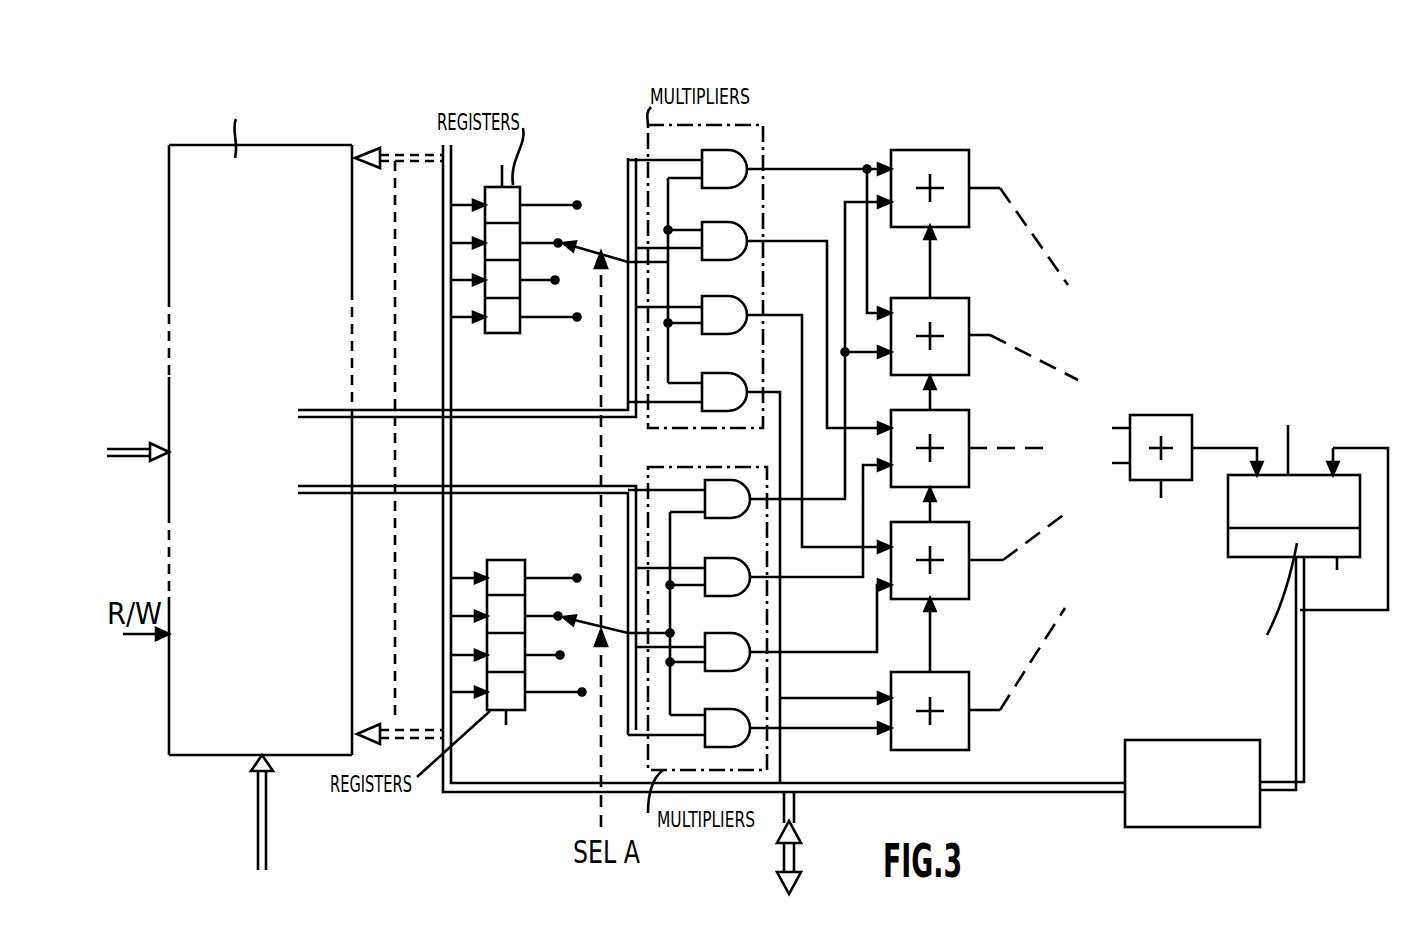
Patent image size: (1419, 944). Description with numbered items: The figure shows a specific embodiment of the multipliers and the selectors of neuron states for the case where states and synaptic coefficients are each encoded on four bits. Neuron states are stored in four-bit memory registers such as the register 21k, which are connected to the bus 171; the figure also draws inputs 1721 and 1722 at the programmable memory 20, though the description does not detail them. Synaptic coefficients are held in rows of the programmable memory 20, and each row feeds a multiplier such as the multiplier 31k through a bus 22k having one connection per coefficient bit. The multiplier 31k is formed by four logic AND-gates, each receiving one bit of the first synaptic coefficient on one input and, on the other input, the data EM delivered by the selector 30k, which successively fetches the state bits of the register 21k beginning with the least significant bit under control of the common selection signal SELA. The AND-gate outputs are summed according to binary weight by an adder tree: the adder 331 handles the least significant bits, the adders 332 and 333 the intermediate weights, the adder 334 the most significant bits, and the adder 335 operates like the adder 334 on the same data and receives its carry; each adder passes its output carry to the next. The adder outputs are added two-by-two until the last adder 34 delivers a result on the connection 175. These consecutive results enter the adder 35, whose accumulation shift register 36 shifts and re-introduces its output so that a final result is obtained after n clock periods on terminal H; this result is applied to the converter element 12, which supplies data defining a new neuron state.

The programmable memory 20 is at (183, 755).
The address input 1721 is at (251, 799).
The data input 1722 is at (121, 448).
The bus 171 is at (467, 794).
The memory register 21k is at (486, 335).
The bus 22k is at (465, 419).
The selector 30k is at (591, 196).
The multiplier 31k is at (763, 130).
The adder 331 is at (947, 672).
The adder 332 is at (972, 542).
The adder 333 is at (970, 436).
The adder 334 is at (970, 305).
The adder 335 is at (969, 170).
The last adder 34 is at (1140, 415).
The adder 35 is at (1289, 430).
The accumulation shift register 36 is at (1253, 543).
The connection 175 is at (1218, 453).
The converter element 12 is at (1148, 828).